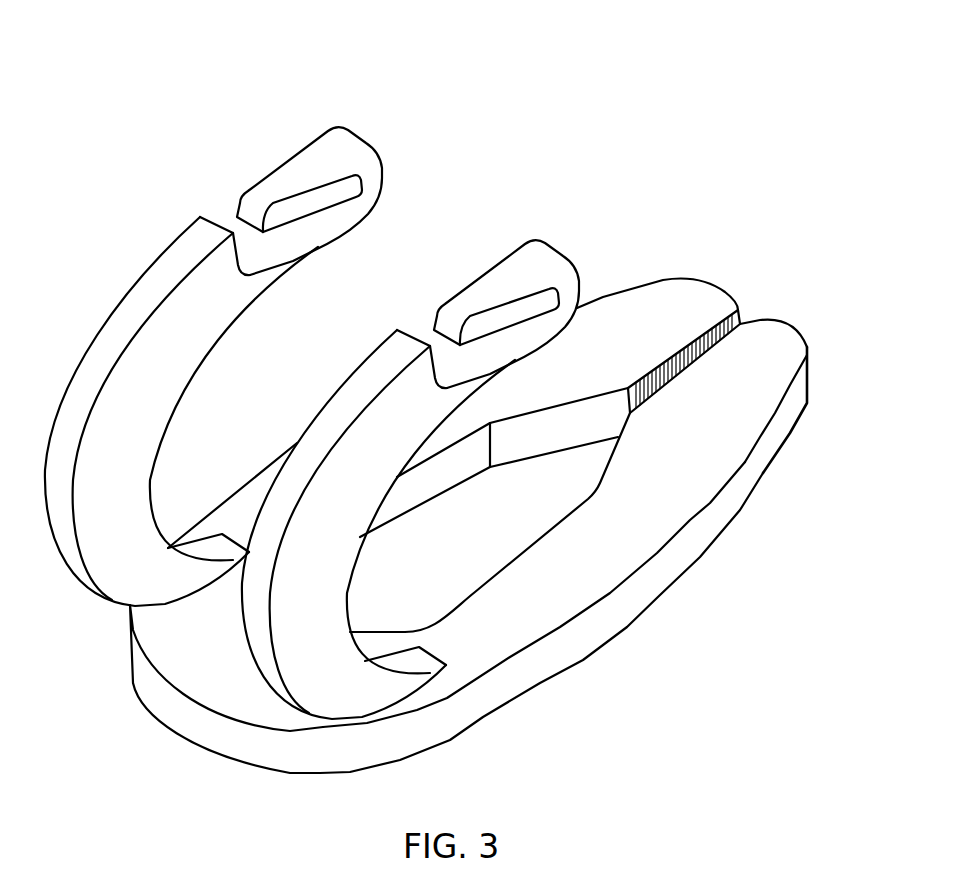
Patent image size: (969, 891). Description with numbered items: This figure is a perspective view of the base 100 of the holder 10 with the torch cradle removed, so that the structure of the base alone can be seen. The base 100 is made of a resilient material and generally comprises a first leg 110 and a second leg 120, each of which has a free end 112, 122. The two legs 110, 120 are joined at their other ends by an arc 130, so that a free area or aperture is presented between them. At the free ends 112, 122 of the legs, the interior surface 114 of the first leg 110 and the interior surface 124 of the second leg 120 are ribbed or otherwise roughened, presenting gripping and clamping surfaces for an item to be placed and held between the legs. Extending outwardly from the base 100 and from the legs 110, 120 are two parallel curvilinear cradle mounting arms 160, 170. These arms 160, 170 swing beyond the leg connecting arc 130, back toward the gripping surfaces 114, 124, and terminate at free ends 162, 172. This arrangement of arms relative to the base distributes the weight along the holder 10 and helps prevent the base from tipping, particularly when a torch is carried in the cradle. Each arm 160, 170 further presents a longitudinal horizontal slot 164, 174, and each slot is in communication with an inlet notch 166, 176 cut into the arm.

The holder 10 is at (581, 152).
The base 100 is at (819, 352).
The first leg 110 is at (605, 627).
The free end of first leg 112 is at (787, 327).
The interior surface of first leg 114 is at (747, 320).
The second leg 120 is at (637, 290).
The free end of second leg 122 is at (712, 280).
The interior surface of second leg 124 is at (687, 343).
The arc 130 is at (178, 712).
The cradle mounting arm 160 is at (423, 456).
The free end of cradle mounting arm 162 is at (519, 295).
The longitudinal horizontal slot 164 is at (532, 342).
The inlet notch 166 is at (378, 335).
The cradle mounting arm 170 is at (190, 375).
The free end of cradle mounting arm 172 is at (365, 143).
The longitudinal horizontal slot 174 is at (297, 253).
The inlet notch 176 is at (215, 205).